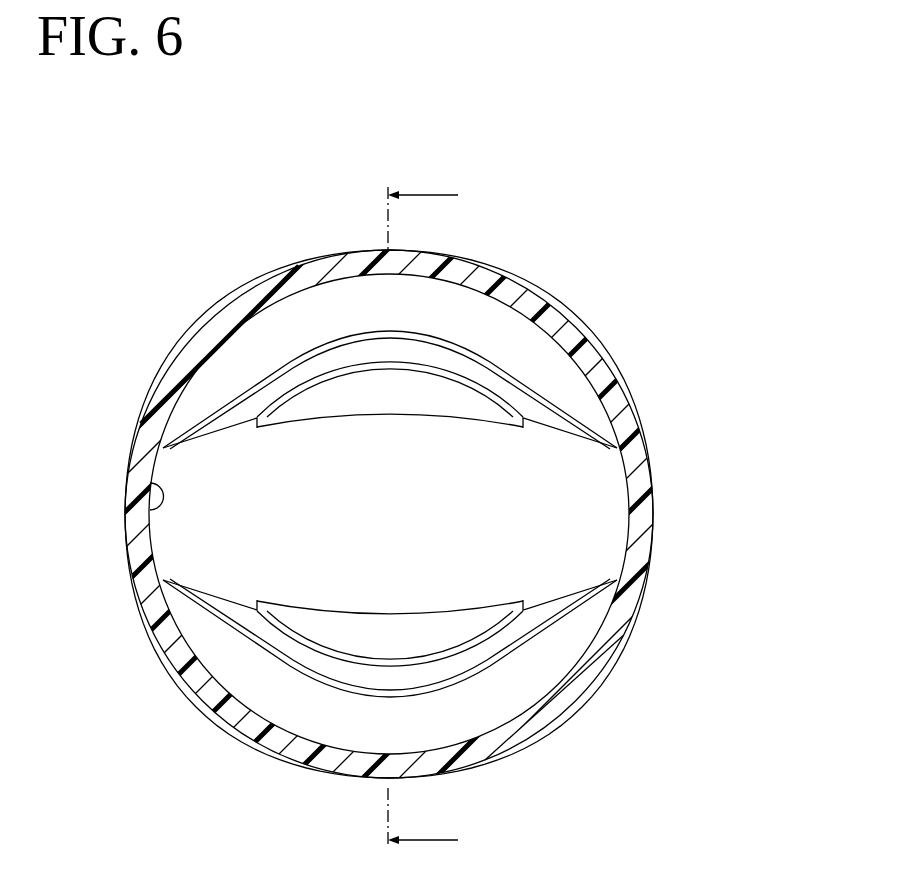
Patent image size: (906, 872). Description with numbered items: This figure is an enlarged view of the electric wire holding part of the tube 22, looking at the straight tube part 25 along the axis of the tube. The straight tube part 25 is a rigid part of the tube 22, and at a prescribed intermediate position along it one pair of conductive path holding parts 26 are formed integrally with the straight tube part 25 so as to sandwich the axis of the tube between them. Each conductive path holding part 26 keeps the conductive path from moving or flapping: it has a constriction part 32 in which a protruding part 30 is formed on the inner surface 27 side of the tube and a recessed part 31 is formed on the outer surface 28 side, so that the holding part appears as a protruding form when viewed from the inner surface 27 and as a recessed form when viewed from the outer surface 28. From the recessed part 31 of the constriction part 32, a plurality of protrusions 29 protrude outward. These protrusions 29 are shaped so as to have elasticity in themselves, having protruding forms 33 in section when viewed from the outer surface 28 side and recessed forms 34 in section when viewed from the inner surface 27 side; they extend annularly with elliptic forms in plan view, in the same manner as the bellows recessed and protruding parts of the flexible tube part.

The fuel injection valve assembly 22 is at (111, 255).
The straight tube part 25 is at (655, 513).
The conductive path holding part 26 is at (567, 306).
The inner surface 27 is at (150, 484).
The outer surface 28 is at (122, 556).
The protrusion 29 is at (197, 331).
The protruding part 30 is at (378, 402).
The recessed part 31 is at (413, 400).
The constriction part 32 is at (764, 598).
The protruding form 33 is at (493, 402).
The recessed form 34 is at (513, 421).